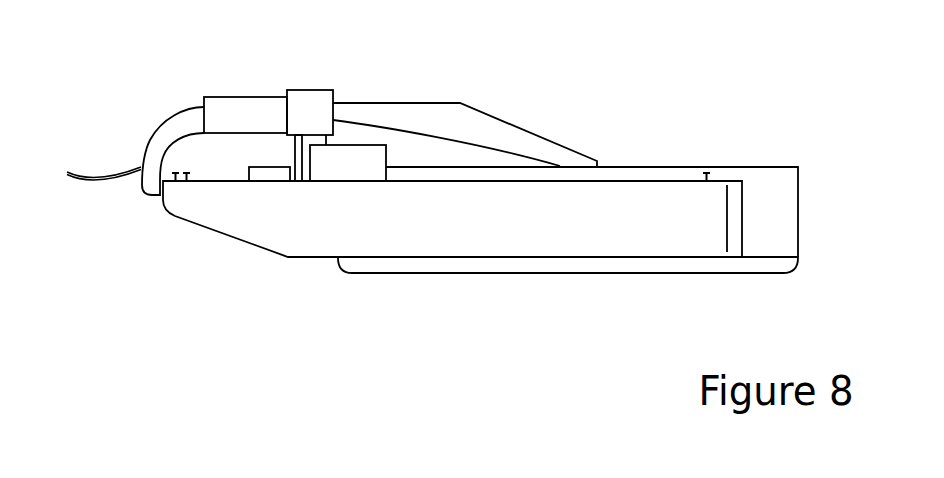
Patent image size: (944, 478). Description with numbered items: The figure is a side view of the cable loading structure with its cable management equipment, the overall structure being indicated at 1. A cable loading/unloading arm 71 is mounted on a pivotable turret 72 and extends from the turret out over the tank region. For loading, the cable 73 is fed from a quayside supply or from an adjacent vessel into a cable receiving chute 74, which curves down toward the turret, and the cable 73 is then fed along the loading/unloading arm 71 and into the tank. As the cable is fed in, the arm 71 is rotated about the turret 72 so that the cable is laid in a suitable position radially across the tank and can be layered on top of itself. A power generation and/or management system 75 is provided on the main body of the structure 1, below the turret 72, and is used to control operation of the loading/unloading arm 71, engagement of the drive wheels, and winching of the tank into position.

The device housing 1 is at (788, 213).
The cable loading/unloading arm 71 is at (465, 123).
The pivotable turret 72 is at (312, 98).
The cable 73 is at (107, 172).
The cable receiving chute 74 is at (167, 143).
The power generation and/or management system 75 is at (338, 165).